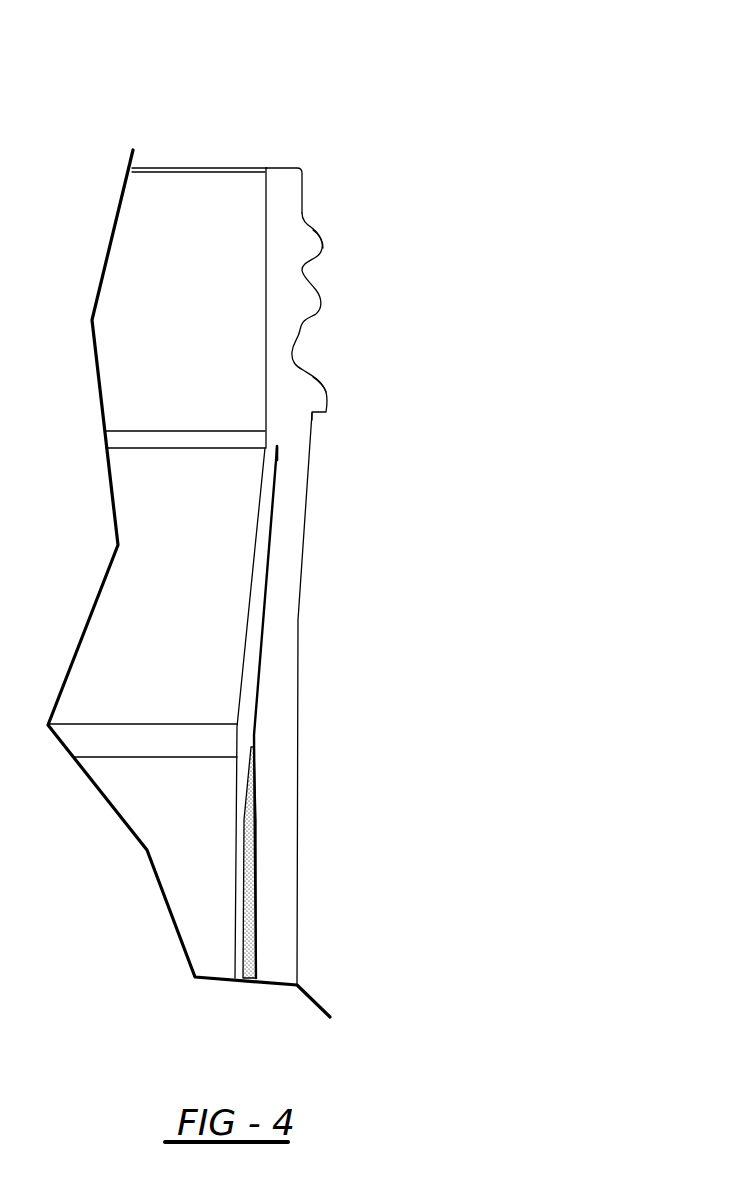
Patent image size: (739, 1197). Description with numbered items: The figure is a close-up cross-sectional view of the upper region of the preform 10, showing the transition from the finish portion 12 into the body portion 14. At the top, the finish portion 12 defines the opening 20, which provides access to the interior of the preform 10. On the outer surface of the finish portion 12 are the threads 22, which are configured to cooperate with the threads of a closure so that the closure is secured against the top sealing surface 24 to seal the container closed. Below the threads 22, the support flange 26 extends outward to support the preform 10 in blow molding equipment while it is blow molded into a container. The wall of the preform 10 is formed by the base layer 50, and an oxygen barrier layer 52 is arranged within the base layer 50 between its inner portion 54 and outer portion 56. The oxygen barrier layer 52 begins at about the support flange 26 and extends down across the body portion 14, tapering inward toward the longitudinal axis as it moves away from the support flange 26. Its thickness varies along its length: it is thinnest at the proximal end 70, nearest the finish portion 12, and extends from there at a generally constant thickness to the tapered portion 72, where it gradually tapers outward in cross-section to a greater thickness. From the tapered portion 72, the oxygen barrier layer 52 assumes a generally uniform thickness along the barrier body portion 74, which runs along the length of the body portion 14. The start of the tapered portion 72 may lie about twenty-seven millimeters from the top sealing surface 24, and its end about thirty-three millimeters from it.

The preform 10 is at (366, 127).
The finish portion 12 is at (302, 269).
The body portion 14 is at (297, 957).
The opening 20 is at (182, 168).
The threads 22 is at (323, 243).
The top sealing surface 24 is at (285, 168).
The support flange 26 is at (325, 390).
The base layer 50 is at (305, 825).
The oxygen barrier layer 52 is at (257, 687).
The inner portion 54 is at (242, 733).
The outer portion 56 is at (287, 882).
The proximal end 70 is at (277, 460).
The tapered portion 72 is at (257, 762).
The barrier body portion 74 is at (257, 927).